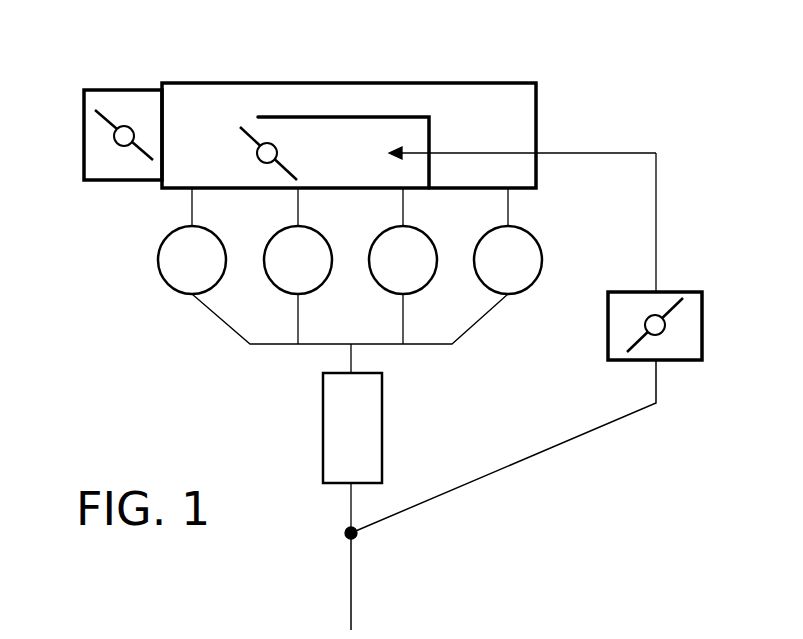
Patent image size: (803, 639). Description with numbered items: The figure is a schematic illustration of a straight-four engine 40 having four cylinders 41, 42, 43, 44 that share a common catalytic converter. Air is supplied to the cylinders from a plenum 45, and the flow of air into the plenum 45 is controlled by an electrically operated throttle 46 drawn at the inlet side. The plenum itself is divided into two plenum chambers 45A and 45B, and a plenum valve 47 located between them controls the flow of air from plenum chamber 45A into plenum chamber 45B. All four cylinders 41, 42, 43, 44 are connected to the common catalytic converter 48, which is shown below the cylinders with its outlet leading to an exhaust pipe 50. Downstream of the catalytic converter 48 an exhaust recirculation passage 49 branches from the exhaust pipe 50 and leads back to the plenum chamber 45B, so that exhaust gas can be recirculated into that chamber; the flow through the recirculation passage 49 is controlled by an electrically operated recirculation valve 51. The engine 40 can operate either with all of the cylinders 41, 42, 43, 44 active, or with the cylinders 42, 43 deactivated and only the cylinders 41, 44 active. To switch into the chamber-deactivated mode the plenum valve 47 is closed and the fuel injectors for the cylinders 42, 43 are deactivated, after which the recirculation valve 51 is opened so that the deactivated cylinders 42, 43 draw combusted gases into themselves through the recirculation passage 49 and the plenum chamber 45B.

The engine 40 is at (572, 68).
The cylinder 41 is at (207, 272).
The cylinder 42 is at (313, 272).
The cylinder 43 is at (418, 272).
The cylinder 44 is at (523, 272).
The plenum 45 is at (536, 117).
The plenum chamber 45A is at (507, 130).
The plenum chamber 45B is at (360, 151).
The throttle 46 is at (114, 137).
The plenum valve 47 is at (257, 153).
The catalytic converter 48 is at (366, 440).
The exhaust recirculation passage 49 is at (508, 466).
The exhaust pipe 50 is at (351, 590).
The recirculation valve 51 is at (702, 292).